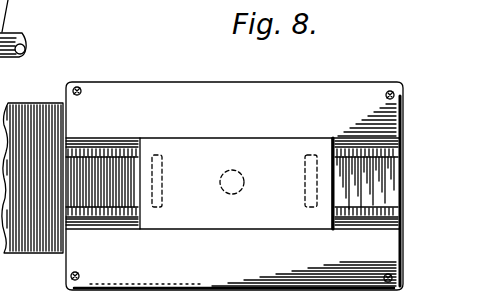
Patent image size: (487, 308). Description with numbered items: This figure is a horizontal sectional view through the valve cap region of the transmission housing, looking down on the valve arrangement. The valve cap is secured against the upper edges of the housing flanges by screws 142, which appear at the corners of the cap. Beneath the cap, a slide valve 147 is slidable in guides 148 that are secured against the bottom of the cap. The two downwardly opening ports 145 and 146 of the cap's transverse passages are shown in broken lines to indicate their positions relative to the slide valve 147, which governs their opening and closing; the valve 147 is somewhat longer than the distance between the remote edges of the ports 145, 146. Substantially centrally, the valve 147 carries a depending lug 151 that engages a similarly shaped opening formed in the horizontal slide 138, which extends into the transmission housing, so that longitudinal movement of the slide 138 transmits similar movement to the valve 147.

The horizontal slide 138 is at (42, 111).
The screws 142 is at (77, 87).
The port 145 is at (162, 182).
The port 146 is at (304, 171).
The slide valve 147 is at (236, 183).
The guides 148 is at (117, 130).
The depending lug 151 is at (230, 171).